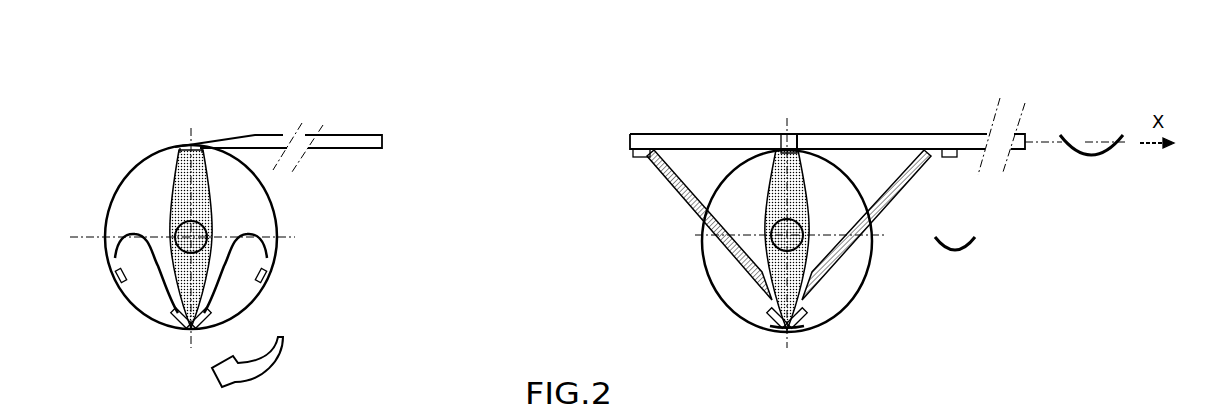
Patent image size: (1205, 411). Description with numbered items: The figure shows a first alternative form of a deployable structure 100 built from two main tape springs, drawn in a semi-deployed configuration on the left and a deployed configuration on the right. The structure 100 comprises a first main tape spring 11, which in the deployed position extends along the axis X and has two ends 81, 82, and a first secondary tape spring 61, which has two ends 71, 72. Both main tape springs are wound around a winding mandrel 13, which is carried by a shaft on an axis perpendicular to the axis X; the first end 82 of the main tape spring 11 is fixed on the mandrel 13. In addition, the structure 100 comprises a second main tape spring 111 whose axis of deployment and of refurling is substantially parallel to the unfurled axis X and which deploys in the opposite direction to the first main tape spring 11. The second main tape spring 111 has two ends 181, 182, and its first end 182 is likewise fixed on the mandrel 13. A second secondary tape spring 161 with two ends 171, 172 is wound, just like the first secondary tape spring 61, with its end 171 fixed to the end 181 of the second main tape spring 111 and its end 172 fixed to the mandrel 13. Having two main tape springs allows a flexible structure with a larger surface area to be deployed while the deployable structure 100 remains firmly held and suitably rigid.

The deployable structure 100 is at (102, 101).
The main tape spring 11 is at (867, 140).
The second main tape spring 111 is at (668, 140).
The end of the second main tape spring 181 is at (640, 133).
The first end of the second main tape spring 182 is at (780, 133).
The first end of the main tape spring 82 is at (798, 135).
The end of the main tape spring 81 is at (1033, 122).
The end of the second secondary tape spring 171 is at (647, 157).
The end of the secondary tape spring 71 is at (937, 157).
The second secondary tape spring 161 is at (687, 208).
The secondary tape spring 61 is at (852, 245).
The end of the second secondary tape spring 172 is at (770, 302).
The end of the secondary tape spring 72 is at (807, 302).
The winding mandrel 13 is at (792, 330).